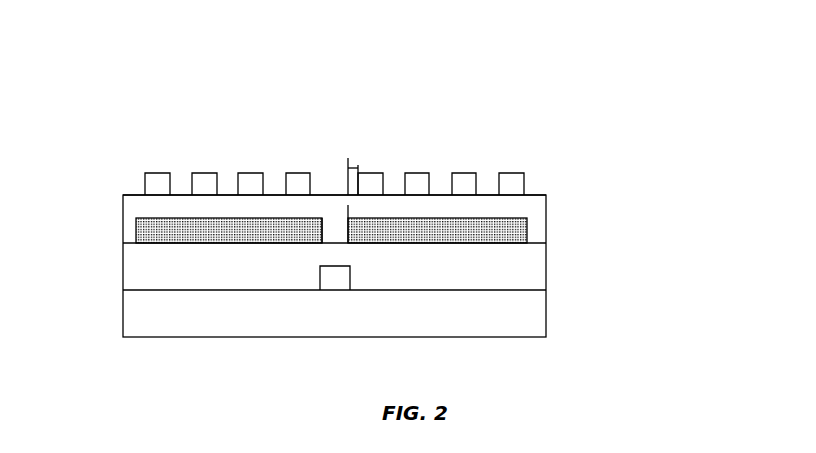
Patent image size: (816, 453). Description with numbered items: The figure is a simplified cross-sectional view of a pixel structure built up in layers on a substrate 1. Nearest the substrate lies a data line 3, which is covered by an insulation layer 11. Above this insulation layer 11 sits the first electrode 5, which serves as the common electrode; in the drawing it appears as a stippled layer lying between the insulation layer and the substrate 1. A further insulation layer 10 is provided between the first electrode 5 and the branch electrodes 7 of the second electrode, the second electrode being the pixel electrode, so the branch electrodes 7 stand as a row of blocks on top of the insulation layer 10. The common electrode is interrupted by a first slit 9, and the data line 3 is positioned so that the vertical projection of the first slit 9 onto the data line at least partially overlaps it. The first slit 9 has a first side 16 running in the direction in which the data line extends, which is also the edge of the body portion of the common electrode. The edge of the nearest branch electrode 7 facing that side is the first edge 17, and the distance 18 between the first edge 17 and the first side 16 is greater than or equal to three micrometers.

The substrate 1 is at (380, 266).
The data line 3 is at (367, 324).
The first electrode 5 is at (392, 210).
The branch electrode of the second electrode 7 is at (367, 173).
The first slit 9 is at (294, 188).
The insulation layer 10 is at (377, 161).
The insulation layer 11 is at (334, 313).
The first side 16 is at (304, 146).
The first edge 17 is at (403, 143).
The distance 18 is at (388, 115).